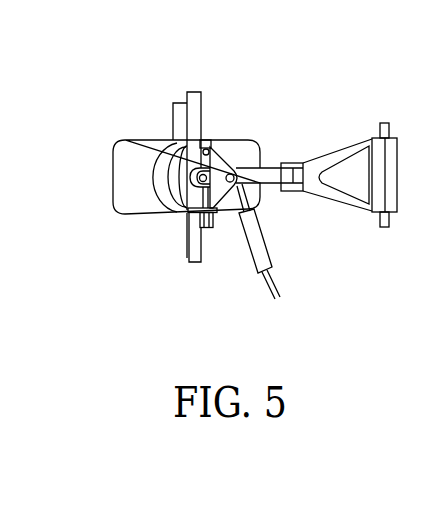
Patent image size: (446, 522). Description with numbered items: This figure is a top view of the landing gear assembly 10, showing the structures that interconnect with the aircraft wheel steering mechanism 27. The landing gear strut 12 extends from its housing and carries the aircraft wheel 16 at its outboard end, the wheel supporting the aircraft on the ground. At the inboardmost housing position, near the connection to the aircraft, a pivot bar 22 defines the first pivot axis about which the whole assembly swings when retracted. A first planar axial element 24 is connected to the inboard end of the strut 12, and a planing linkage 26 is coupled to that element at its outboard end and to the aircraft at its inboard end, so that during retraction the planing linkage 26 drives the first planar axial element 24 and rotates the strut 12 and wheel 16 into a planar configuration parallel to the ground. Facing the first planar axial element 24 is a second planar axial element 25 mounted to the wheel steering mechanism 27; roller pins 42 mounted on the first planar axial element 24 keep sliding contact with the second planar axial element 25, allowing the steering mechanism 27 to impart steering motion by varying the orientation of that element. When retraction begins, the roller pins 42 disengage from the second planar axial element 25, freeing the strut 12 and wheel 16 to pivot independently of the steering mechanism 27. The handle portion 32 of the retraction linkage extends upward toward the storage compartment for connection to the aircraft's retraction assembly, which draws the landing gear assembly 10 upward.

The landing gear assembly 10 is at (120, 291).
The landing gear strut 12 is at (174, 110).
The aircraft wheel 16 is at (113, 205).
The pivot bar 22 is at (189, 254).
The first planar axial element 24 is at (178, 215).
The second planar axial element 25 is at (210, 160).
The planing linkage 26 is at (207, 228).
The wheel steering mechanism 27 is at (273, 270).
The handle portion 32 is at (398, 173).
The roller pins 42 is at (206, 149).